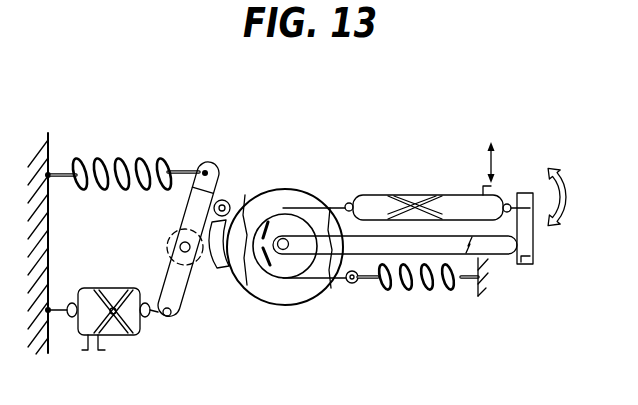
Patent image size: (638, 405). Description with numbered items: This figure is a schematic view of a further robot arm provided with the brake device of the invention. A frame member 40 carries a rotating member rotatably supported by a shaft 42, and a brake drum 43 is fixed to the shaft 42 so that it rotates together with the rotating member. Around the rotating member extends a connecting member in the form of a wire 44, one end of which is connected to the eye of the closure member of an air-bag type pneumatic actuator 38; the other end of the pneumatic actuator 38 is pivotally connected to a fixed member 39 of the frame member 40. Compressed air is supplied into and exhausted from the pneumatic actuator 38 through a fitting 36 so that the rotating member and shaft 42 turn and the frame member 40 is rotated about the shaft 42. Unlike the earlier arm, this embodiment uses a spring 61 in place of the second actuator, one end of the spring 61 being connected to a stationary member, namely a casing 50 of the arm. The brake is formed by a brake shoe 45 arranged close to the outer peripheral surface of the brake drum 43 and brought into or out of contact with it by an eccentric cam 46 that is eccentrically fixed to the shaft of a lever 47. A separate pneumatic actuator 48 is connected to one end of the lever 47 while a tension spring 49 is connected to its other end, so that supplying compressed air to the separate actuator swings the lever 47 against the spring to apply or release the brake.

The fitting 36 is at (499, 192).
The pneumatic actuator 38 is at (417, 195).
The fixed member 39 is at (533, 247).
The frame member 40 is at (503, 247).
The shaft 42 is at (283, 238).
The brake drum 43 is at (293, 307).
The wire 44 is at (342, 204).
The brake shoe 45 is at (232, 270).
The eccentric cam 46 is at (190, 302).
The lever 47 is at (212, 165).
The pneumatic actuator 48 is at (123, 337).
The tension spring 49 is at (125, 158).
The casing 50 is at (490, 280).
The spring 61 is at (410, 290).